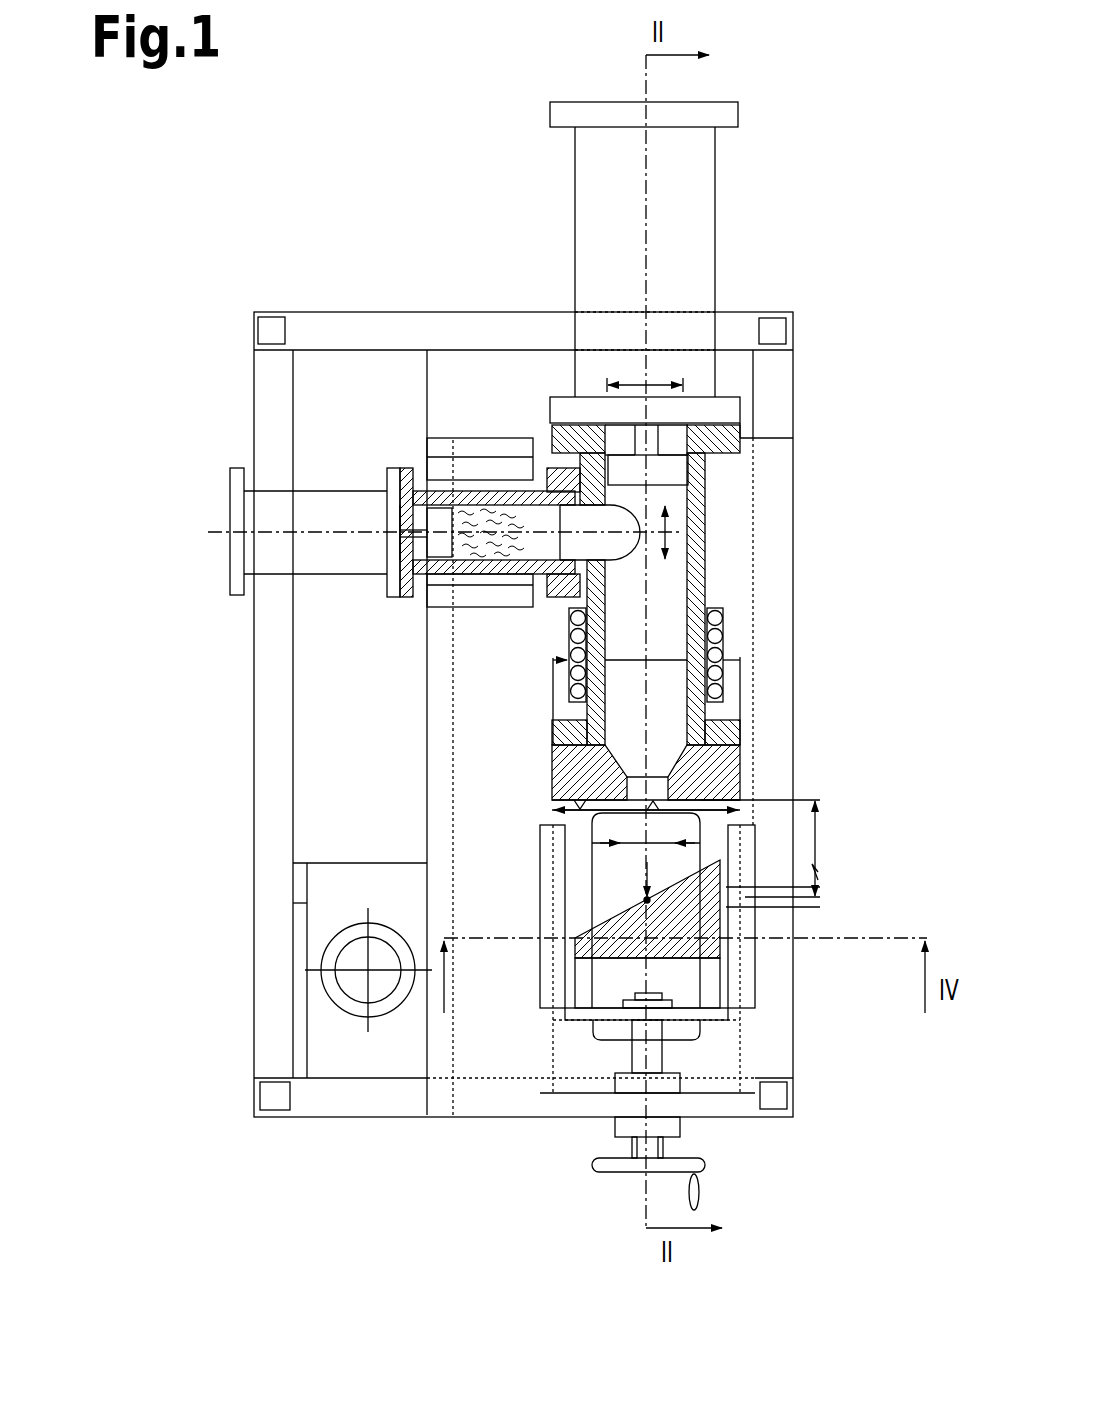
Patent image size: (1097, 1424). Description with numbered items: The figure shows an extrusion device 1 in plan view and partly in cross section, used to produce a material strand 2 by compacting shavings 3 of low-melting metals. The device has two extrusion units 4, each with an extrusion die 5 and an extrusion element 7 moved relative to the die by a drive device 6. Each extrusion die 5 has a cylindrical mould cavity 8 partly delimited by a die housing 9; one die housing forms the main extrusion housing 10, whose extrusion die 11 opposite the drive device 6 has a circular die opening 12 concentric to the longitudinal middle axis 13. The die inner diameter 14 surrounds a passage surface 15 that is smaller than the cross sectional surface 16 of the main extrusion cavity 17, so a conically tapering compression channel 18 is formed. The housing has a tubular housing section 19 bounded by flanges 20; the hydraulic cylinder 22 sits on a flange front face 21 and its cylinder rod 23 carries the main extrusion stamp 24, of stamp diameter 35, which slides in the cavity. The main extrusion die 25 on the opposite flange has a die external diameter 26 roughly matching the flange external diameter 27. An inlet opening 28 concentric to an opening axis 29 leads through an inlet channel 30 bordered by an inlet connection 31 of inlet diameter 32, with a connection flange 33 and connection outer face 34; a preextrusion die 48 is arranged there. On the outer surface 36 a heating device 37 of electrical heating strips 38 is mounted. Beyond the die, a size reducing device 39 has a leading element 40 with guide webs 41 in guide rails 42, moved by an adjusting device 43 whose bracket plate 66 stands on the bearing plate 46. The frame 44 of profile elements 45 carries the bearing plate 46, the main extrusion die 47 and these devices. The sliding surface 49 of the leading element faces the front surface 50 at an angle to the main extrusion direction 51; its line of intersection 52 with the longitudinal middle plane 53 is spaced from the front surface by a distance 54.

The extrusion device 1 is at (250, 231).
The material strand 2 is at (487, 511).
The shavings 3 is at (437, 422).
The extrusion unit 4 is at (212, 563).
The extrusion die 5 is at (407, 608).
The drive device 6 is at (768, 88).
The extrusion element 7 is at (400, 500).
The mould cavity 8 is at (443, 588).
The die housing 9 is at (422, 605).
The main extrusion housing 10 is at (700, 573).
The extrusion die 11 is at (742, 765).
The die opening 12 is at (600, 870).
The longitudinal middle axis 13 is at (734, 632).
The die inner diameter 14 is at (727, 863).
The passage surface 15 is at (753, 832).
The cross sectional surface 16 is at (742, 737).
The main extrusion cavity 17 is at (725, 660).
The compression channel 18 is at (657, 733).
The housing section 19 is at (710, 482).
The flange 20 is at (703, 455).
The flange front face 21 is at (688, 425).
The hydraulic cylinder 22 is at (680, 175).
The cylinder rod 23 is at (672, 440).
The main extrusion stamp 24 is at (705, 480).
The main extrusion die 25 is at (568, 752).
The die external diameter 26 is at (620, 830).
The flange external diameter 27 is at (553, 687).
The inlet opening 28 is at (560, 572).
The opening axis 29 is at (612, 518).
The inlet channel 30 is at (578, 518).
The inlet connection 31 is at (578, 450).
The inlet diameter 32 is at (715, 530).
The connection flange 33 is at (567, 467).
The connection outer face 34 is at (598, 543).
The stamp diameter 35 is at (638, 382).
The outer surface 36 is at (706, 524).
The heating device 37 is at (724, 617).
The electrical heating strip 38 is at (553, 697).
The size reducing device 39 is at (752, 983).
The leading element 40 is at (725, 907).
The guide web 41 is at (560, 1050).
The guide rail 42 is at (570, 1000).
The adjusting device 43 is at (715, 1052).
The frame 44 is at (222, 1085).
The profile element 45 is at (272, 953).
The bearing plate 46 is at (440, 1050).
The main extrusion die 47 is at (536, 748).
The preextrusion die 48 is at (403, 510).
The sliding surface 49 is at (605, 1010).
The front surface 50 is at (597, 820).
The main extrusion direction 51 is at (610, 905).
The line of intersection 52 is at (647, 900).
The longitudinal middle plane 53 is at (742, 797).
The distance 54 is at (818, 872).
The bracket plate 66 is at (712, 1110).